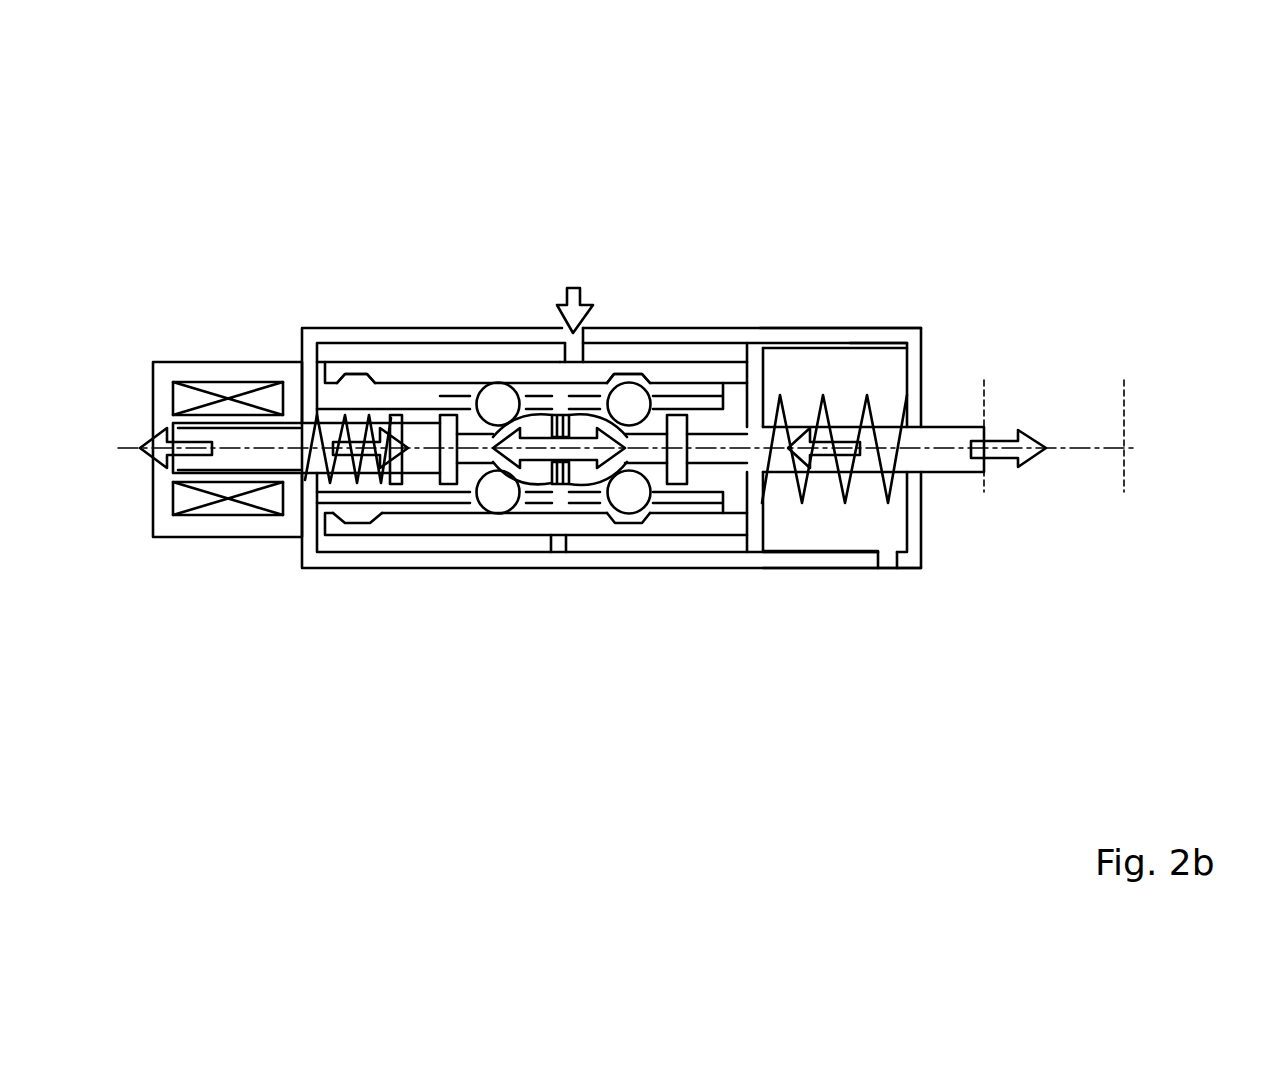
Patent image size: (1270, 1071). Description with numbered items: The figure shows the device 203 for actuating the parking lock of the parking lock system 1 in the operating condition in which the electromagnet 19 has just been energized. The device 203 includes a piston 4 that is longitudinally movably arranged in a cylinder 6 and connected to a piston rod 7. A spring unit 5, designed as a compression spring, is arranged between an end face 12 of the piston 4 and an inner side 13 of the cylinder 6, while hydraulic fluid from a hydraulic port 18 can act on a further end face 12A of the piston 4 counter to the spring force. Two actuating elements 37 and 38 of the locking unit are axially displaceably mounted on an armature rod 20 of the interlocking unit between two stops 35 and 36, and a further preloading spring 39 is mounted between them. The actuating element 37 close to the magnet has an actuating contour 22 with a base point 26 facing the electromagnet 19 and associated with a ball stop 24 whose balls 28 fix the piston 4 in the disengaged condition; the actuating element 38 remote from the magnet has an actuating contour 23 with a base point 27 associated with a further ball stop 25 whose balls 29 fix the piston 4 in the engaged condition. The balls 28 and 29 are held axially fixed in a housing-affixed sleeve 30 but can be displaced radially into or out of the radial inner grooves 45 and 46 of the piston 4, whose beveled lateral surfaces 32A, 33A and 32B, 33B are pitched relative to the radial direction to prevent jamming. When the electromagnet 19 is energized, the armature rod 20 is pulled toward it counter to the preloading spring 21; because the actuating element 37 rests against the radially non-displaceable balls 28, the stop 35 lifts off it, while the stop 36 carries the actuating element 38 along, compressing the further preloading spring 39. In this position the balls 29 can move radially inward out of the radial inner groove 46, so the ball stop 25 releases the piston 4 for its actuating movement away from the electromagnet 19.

The parking lock system 1 is at (295, 227).
The piston 4 is at (752, 353).
The spring unit 5 is at (808, 343).
The cylinder 6 is at (850, 560).
The piston rod 7 is at (946, 437).
The end face of the piston 12 is at (832, 417).
The further end face of the piston 12A is at (762, 387).
The inner side of the cylinder 13 is at (900, 513).
The hydraulic port 18 is at (593, 332).
The electromagnet 19 is at (224, 375).
The armature rod 20 is at (257, 457).
The preloading spring 21 is at (335, 458).
The actuating contour 22 is at (530, 488).
The actuating contour 23 is at (615, 455).
The ball stop 24 is at (485, 518).
The ball stop 25 is at (633, 503).
The base point of the actuating contour 22 26 is at (397, 470).
The base point of the actuating contour 23 27 is at (640, 505).
The ball of the ball stop 24 28 is at (498, 500).
The ball of the ball stop 25 29 is at (632, 525).
The sleeve 30 is at (317, 402).
The lateral surface of the radial inner groove 45 32A is at (340, 377).
The lateral surface of the radial inner groove 46 32B is at (373, 380).
The lateral surface of the radial inner groove 45 33A is at (630, 370).
The lateral surface of the radial inner groove 46 33B is at (698, 375).
The stop 35 is at (362, 428).
The stop 36 is at (688, 464).
The actuating element 37 is at (538, 428).
The actuating element 38 is at (577, 425).
The further preloading spring 39 is at (557, 484).
The radial inner groove 45 is at (358, 372).
The radial inner groove 46 is at (650, 373).
The device 203 is at (877, 272).